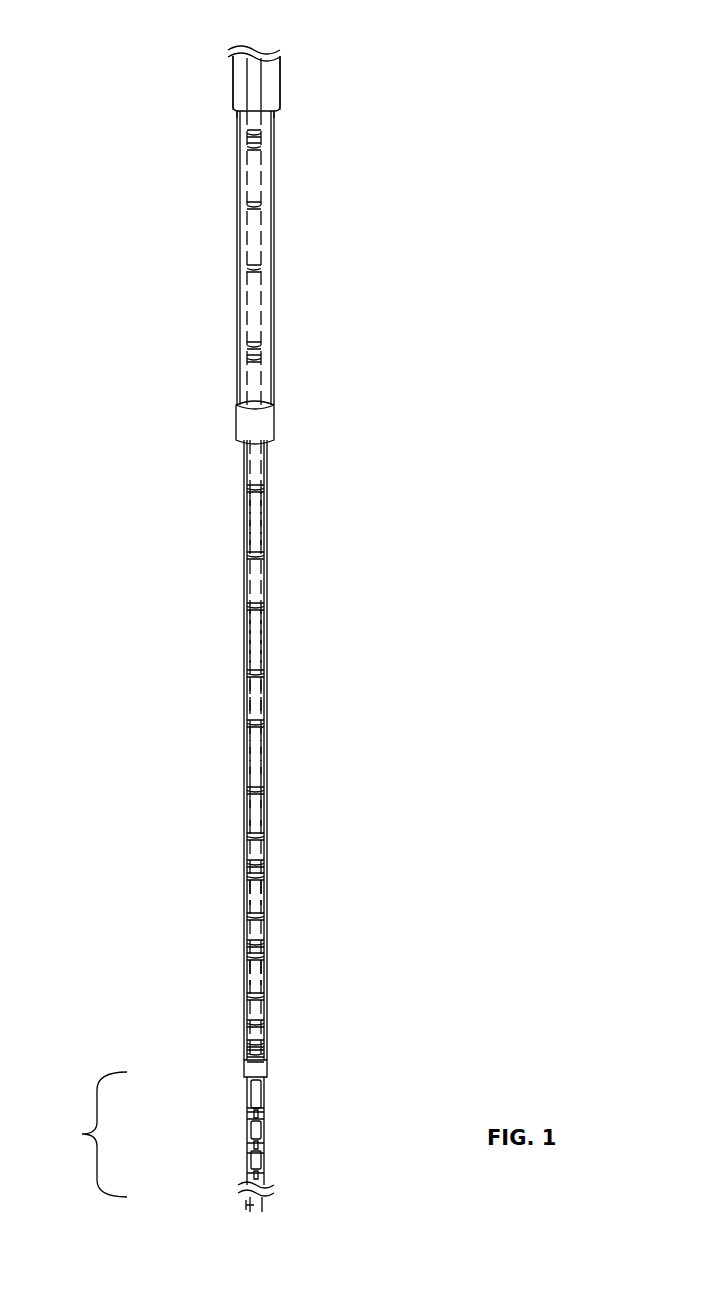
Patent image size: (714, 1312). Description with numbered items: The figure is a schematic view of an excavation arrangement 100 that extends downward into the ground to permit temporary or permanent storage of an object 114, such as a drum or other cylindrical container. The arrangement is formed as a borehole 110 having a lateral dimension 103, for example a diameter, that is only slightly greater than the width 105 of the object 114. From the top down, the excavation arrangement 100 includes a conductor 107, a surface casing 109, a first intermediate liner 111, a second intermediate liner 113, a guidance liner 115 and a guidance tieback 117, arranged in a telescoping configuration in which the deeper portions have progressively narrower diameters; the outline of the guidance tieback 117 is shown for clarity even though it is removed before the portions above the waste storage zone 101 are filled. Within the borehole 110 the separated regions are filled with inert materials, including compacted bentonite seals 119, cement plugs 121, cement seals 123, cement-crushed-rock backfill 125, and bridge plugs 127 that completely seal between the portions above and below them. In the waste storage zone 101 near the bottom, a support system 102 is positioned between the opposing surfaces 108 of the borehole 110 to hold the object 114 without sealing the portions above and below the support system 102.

The excavation arrangement 100 is at (495, 302).
The waste storage zone 101 is at (81, 1134).
The support system 102 is at (265, 1110).
The lateral dimension 103 is at (258, 1212).
The width 105 is at (250, 1151).
The conductor 107 is at (289, 123).
The opposing surfaces 108 is at (270, 1195).
The surface casing 109 is at (292, 68).
The borehole 110 is at (221, 1176).
The first intermediate liner 111 is at (289, 170).
The second intermediate liner 113 is at (231, 810).
The object 114 is at (265, 1098).
The guidance liner 115 is at (233, 1110).
The guidance tieback 117 is at (245, 565).
The compacted bentonite seal 119 is at (280, 883).
The cement plug 121 is at (289, 270).
The cement seal 123 is at (280, 513).
The cement-crushed-rock backfill 125 is at (280, 690).
The bridge plug 127 is at (289, 345).